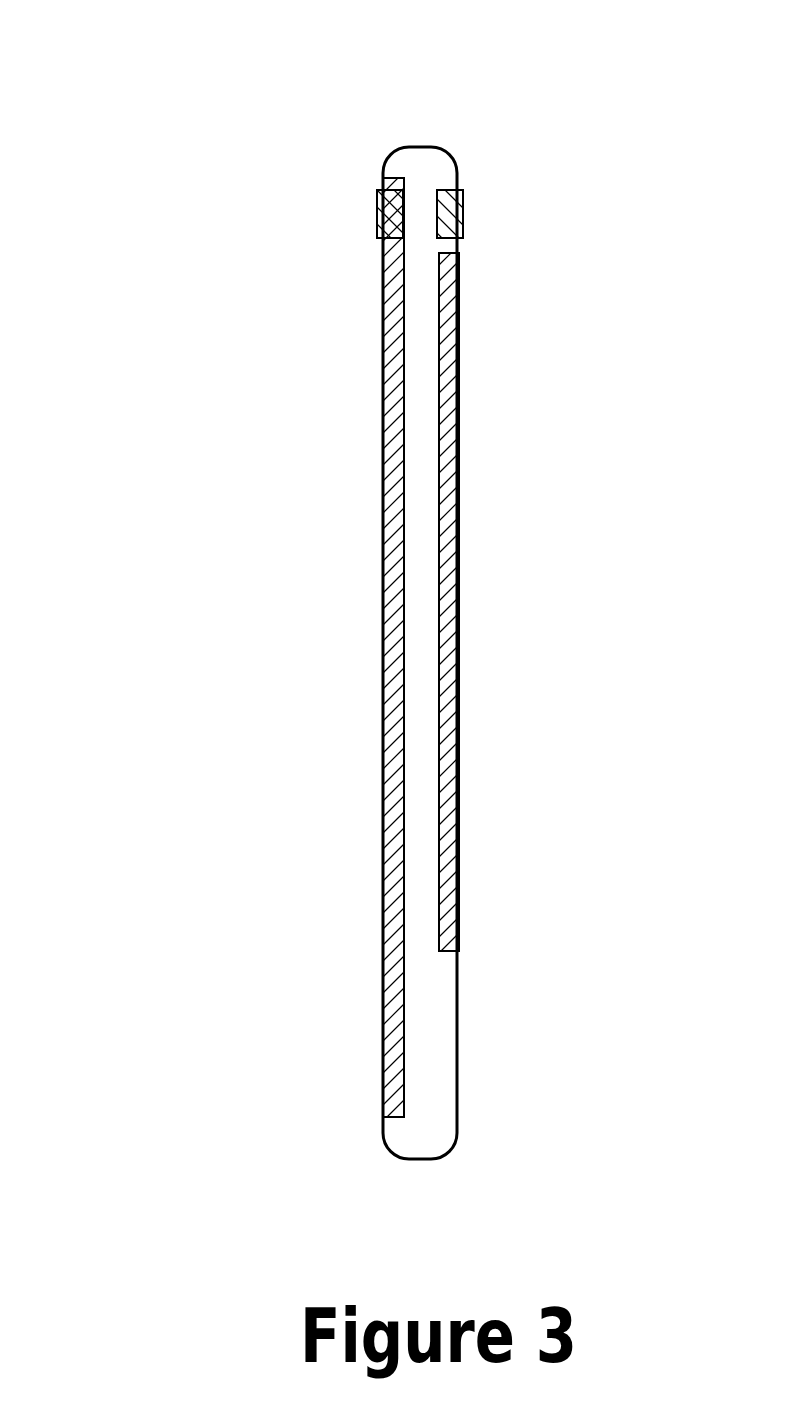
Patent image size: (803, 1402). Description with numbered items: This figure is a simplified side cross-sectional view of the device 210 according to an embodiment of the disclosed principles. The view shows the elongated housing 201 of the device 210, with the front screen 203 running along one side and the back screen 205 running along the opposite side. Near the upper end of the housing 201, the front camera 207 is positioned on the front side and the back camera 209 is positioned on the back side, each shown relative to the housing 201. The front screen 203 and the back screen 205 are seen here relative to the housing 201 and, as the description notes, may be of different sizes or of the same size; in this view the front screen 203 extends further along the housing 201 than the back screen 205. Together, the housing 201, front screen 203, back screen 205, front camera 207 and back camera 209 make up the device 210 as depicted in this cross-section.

The housing 201 is at (419, 147).
The front screen 203 is at (383, 653).
The back screen 205 is at (460, 653).
The front camera 207 is at (377, 215).
The back camera 209 is at (463, 215).
The device 210 is at (258, 417).